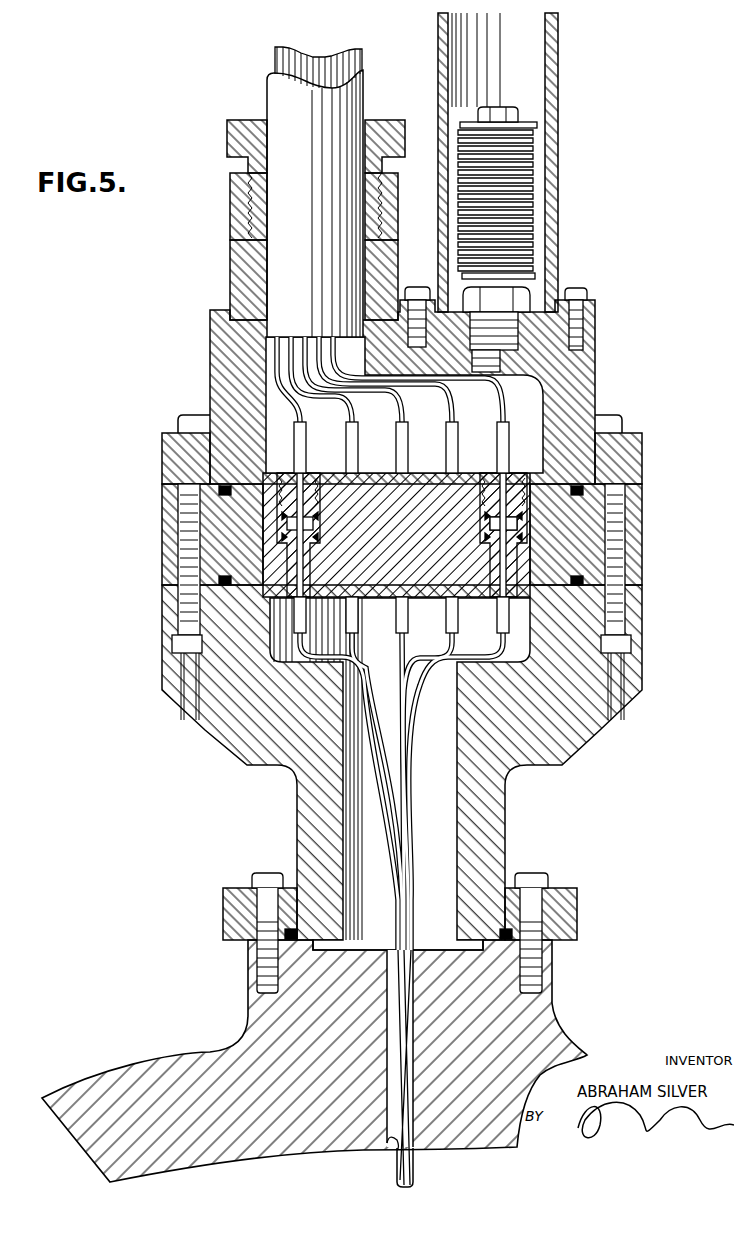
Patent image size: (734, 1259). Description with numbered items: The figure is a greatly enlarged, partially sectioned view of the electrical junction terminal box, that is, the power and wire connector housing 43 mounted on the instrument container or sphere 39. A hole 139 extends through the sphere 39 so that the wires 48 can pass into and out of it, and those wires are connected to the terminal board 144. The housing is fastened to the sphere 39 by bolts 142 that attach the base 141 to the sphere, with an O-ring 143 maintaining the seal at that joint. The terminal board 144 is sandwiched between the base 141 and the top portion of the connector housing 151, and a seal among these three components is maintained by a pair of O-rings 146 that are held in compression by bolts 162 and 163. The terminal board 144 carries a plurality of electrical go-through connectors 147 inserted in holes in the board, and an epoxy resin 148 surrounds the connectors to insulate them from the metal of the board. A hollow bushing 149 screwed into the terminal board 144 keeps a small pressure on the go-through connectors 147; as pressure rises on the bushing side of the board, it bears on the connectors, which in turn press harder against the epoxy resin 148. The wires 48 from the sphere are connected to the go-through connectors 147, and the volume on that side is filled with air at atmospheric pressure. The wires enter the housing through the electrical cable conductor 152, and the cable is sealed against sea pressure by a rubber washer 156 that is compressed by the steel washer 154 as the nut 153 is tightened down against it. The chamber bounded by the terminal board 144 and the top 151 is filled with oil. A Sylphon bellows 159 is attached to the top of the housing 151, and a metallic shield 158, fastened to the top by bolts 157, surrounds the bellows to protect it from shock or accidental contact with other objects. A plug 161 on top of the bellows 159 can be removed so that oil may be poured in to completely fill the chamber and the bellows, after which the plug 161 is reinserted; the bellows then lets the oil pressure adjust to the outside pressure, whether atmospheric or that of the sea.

The instrument container 39 is at (148, 1076).
The connector body 43 is at (646, 600).
The wires 48 is at (277, 54).
The hole 139 is at (393, 1150).
The base 141 is at (229, 904).
The bolts 142 is at (262, 880).
The O-ring 143 is at (290, 938).
The terminal board 144 is at (166, 535).
The O-rings 146 is at (218, 490).
The electrical go-through connectors 147 is at (452, 456).
The epoxy resin 148 is at (488, 549).
The hollow bushing 149 is at (506, 481).
The top portion of the connector housing 151 is at (165, 457).
The electrical cable conductor 152 is at (276, 101).
The nut 153 is at (231, 134).
The steel washer 154 is at (262, 243).
The rubber washer 156 is at (258, 281).
The bolts 157 is at (418, 287).
The metallic shield 158 is at (557, 205).
The Sylphon bellows 159 is at (536, 150).
The plug 161 is at (500, 107).
The bolts 162 is at (186, 422).
The bolts 163 is at (176, 646).